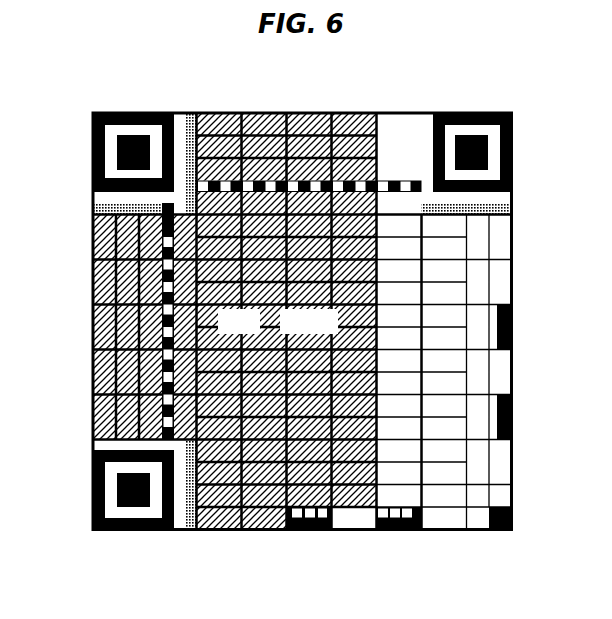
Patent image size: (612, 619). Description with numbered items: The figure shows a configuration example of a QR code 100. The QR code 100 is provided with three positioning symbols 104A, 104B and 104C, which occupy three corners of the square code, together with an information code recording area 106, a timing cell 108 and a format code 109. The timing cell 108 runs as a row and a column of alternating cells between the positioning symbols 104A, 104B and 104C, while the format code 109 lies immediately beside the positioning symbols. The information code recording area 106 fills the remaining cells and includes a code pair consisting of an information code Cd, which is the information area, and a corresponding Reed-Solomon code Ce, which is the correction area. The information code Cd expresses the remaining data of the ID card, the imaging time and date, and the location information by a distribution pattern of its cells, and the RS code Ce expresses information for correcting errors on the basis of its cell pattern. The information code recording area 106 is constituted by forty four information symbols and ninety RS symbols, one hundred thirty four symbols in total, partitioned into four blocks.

The QR code 100 is at (577, 92).
The positioning symbol 104A is at (140, 113).
The positioning symbol 104B is at (477, 113).
The positioning symbol 104C is at (130, 531).
The information code recording area 106 is at (302, 321).
The timing cell 108 is at (313, 174).
The format code 109 is at (193, 113).